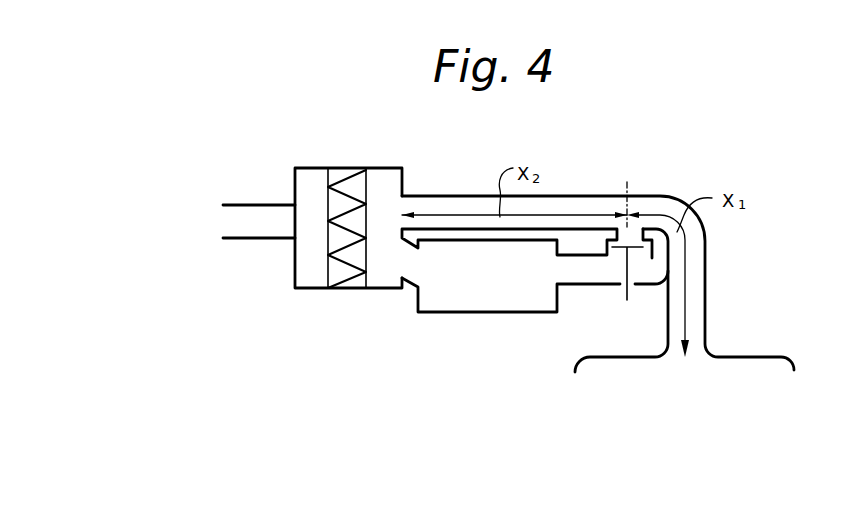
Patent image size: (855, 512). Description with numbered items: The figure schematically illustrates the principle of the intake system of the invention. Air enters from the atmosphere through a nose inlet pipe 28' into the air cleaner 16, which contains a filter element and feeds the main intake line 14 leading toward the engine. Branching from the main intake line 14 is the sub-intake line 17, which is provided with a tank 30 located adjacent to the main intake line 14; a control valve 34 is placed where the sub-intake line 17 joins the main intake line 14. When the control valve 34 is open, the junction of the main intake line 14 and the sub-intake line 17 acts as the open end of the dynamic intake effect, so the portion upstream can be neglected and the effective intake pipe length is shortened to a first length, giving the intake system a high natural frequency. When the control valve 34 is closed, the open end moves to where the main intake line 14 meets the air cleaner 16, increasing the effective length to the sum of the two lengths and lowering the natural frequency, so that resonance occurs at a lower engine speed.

The main intake line 14 is at (660, 192).
The air cleaner 16 is at (313, 290).
The sub-intake line 17 is at (511, 308).
The inlet tube 28' is at (259, 193).
The tank 30 is at (498, 313).
The control valve 34 is at (636, 249).